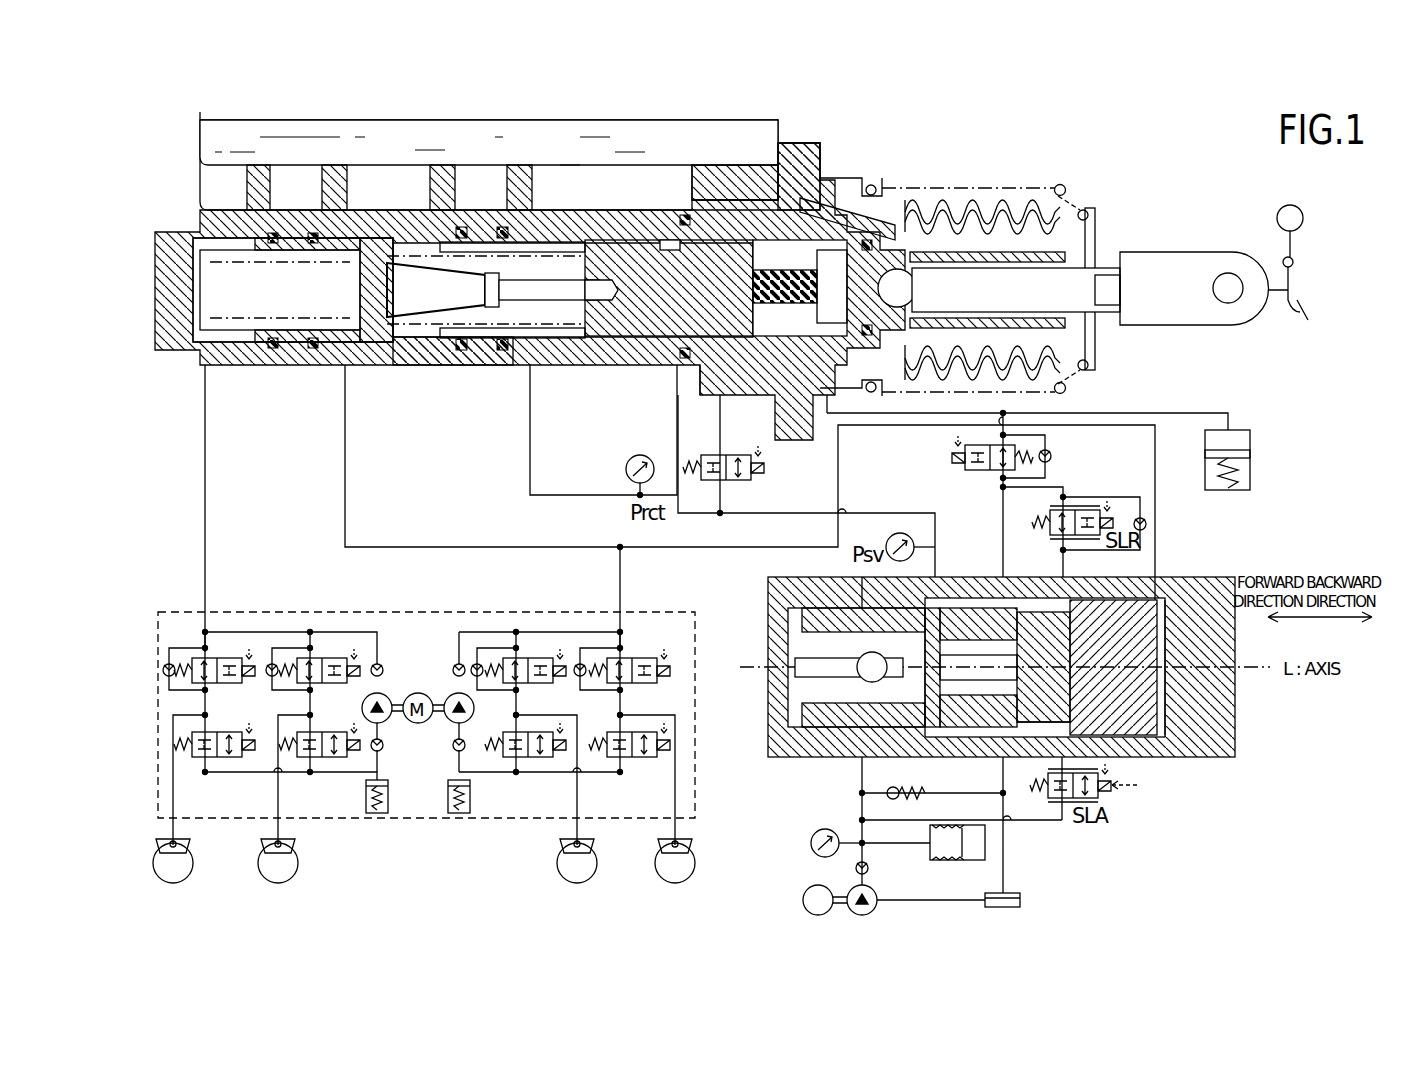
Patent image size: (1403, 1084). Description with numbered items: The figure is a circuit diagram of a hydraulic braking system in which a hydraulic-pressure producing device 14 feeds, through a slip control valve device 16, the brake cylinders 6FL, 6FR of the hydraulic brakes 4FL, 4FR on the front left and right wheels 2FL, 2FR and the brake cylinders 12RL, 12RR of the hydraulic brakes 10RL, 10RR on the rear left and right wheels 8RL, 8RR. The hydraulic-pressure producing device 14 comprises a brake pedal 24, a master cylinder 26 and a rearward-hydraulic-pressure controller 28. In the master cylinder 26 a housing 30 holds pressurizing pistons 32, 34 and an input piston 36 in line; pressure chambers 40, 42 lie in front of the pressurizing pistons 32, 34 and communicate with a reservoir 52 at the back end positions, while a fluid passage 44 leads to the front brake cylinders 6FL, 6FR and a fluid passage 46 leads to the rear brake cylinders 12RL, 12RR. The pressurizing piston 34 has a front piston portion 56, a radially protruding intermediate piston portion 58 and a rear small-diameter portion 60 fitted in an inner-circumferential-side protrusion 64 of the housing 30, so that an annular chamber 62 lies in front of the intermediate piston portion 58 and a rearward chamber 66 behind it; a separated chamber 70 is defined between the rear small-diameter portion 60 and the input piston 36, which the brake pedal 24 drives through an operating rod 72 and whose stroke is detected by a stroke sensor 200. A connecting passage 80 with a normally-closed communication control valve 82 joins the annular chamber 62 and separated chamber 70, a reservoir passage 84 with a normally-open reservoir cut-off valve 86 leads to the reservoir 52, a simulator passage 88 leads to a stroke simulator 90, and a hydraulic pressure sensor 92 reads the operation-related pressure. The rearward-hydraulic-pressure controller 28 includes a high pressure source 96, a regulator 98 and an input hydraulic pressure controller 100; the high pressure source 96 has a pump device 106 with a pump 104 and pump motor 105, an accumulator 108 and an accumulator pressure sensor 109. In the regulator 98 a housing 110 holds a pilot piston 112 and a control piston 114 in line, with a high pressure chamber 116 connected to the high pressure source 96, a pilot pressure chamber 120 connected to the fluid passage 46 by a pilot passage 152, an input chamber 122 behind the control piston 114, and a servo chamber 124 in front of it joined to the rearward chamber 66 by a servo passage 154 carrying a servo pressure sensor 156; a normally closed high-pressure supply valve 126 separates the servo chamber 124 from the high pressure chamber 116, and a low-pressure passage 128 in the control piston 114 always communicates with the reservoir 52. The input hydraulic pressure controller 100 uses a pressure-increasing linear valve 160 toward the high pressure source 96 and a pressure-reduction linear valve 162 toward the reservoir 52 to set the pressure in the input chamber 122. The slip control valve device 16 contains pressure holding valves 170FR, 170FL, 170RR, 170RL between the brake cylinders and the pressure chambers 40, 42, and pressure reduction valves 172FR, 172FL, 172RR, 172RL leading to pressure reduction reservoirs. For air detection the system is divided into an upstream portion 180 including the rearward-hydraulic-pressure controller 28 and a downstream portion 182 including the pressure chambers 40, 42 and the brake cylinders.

The hydraulic-pressure producing device 14 is at (1212, 385).
The slip control valve device 16 is at (165, 610).
The brake pedal 24 is at (1298, 300).
The master cylinder 26 is at (1096, 179).
The rearward-hydraulic-pressure controller 28 is at (1162, 525).
The housing 30 is at (240, 350).
The pressurizing piston 32 is at (375, 340).
The pressurizing piston 34 is at (612, 355).
The input piston 36 is at (990, 252).
The pressure chamber 40 is at (220, 240).
The pressure chamber 42 is at (430, 345).
The fluid passage 44 is at (205, 462).
The fluid passage 46 is at (345, 467).
The reservoir 52 is at (200, 152).
The front piston portion 56 is at (578, 340).
The intermediate piston portion 58 is at (632, 342).
The rear small-diameter portion 60 is at (833, 262).
The annular chamber 62 is at (548, 345).
The inner-circumferential-side protrusion 64 is at (710, 345).
The rearward chamber 66 is at (665, 345).
The separated chamber 70 is at (853, 240).
The operating rod 72 is at (1060, 285).
The connecting passage 80 is at (530, 398).
The communication control valve 82 is at (738, 478).
The reservoir passage 84 is at (1003, 508).
The reservoir cut-off valve 86 is at (995, 470).
The simulator passage 88 is at (1168, 413).
The stroke simulator 90 is at (1240, 432).
The hydraulic pressure sensor 92 is at (627, 465).
The high pressure source 96 is at (845, 824).
The regulator 98 is at (1237, 756).
The input hydraulic pressure controller 100 is at (1105, 846).
The pump 104 is at (872, 888).
The pump motor 105 is at (803, 898).
The pump device 106 is at (842, 882).
The accumulator 108 is at (990, 843).
The accumulator pressure sensor 109 is at (811, 840).
The housing 110 is at (1195, 757).
The pilot piston 112 is at (1175, 590).
The control piston 114 is at (1100, 615).
The high pressure chamber 116 is at (810, 680).
The pilot pressure chamber 120 is at (1160, 715).
The input chamber 122 is at (1085, 735).
The servo chamber 124 is at (945, 605).
The high-pressure supply valve 126 is at (880, 620).
The low-pressure passage 128 is at (1010, 640).
The pilot passage 152 is at (650, 555).
The servo passage 154 is at (860, 513).
The servo pressure sensor 156 is at (892, 538).
The pressure-increasing linear valve 160 is at (1072, 803).
The pressure-reduction linear valve 162 is at (1078, 506).
The upstream portion 180 is at (861, 490).
The downstream portion 182 is at (222, 548).
The stroke sensor 200 is at (1292, 205).
The pressure holding valve 170FR is at (212, 682).
The pressure holding valve 170FL is at (330, 658).
The pressure holding valve 170RR is at (533, 682).
The pressure holding valve 170RL is at (648, 658).
The pressure reduction valve 172FR is at (220, 757).
The pressure reduction valve 172FL is at (325, 757).
The pressure reduction valve 172RR is at (532, 757).
The pressure reduction valve 172RL is at (636, 757).
The front right wheel 2FR is at (165, 878).
The front left wheel 2FL is at (290, 878).
The hydraulic brake 4FR is at (160, 846).
The hydraulic brake 4FL is at (252, 855).
The brake cylinder 6FR is at (180, 842).
The brake cylinder 6FL is at (290, 842).
The rear right wheel 8RR is at (568, 875).
The rear left wheel 8RL is at (668, 875).
The hydraulic brake 10RR is at (555, 856).
The hydraulic brake 10RL is at (652, 853).
The brake cylinder 12RR is at (577, 842).
The brake cylinder 12RL is at (675, 842).